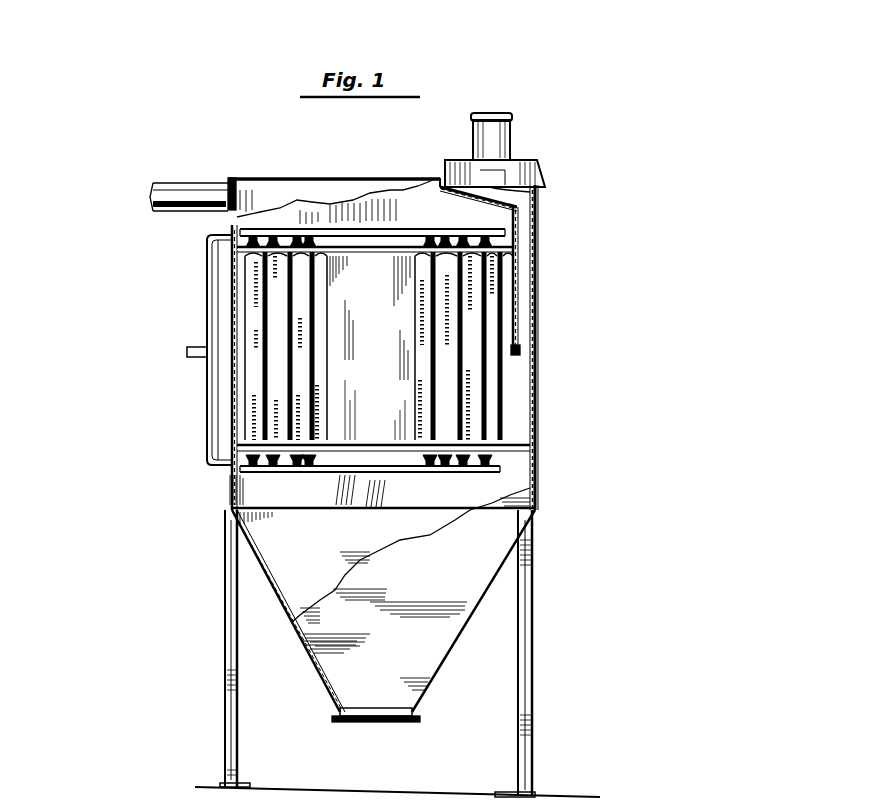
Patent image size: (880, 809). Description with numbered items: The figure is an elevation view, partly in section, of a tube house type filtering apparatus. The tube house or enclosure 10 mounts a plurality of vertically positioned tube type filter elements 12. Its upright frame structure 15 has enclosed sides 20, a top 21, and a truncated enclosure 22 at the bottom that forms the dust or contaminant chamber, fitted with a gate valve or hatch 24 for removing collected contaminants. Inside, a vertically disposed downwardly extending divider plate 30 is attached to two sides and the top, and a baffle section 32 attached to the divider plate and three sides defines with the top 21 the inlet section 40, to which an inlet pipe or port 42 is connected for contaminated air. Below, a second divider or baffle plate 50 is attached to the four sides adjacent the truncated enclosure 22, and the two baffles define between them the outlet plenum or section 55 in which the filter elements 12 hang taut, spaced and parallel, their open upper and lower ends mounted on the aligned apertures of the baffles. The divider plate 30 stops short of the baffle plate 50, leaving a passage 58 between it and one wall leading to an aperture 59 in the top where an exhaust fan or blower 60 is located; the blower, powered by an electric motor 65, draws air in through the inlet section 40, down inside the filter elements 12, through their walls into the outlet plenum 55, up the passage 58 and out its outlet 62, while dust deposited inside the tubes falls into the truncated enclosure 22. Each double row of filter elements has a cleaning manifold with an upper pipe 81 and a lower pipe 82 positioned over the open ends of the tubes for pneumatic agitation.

The tube house or enclosure 10 is at (546, 320).
The tube type filter elements 12 is at (258, 310).
The upright frame structure 15 is at (536, 568).
The sides 20 is at (538, 410).
The top 21 is at (382, 178).
The truncated enclosure 22 is at (446, 656).
The gate valve or hatch 24 is at (415, 722).
The divider plate 30 is at (519, 296).
The baffle section 32 is at (388, 236).
The inlet section 40 is at (300, 210).
The inlet pipe or port 42 is at (220, 182).
The second divider or baffle plate 50 is at (522, 446).
The outlet plenum or section 55 is at (522, 398).
The passage 58 is at (540, 250).
The aperture 59 is at (486, 189).
The exhaust fan or blower 60 is at (476, 166).
The outlet of the blower 62 is at (532, 163).
The electric motor 65 is at (500, 116).
The upper pipe 81 is at (350, 232).
The lower pipe 82 is at (393, 474).